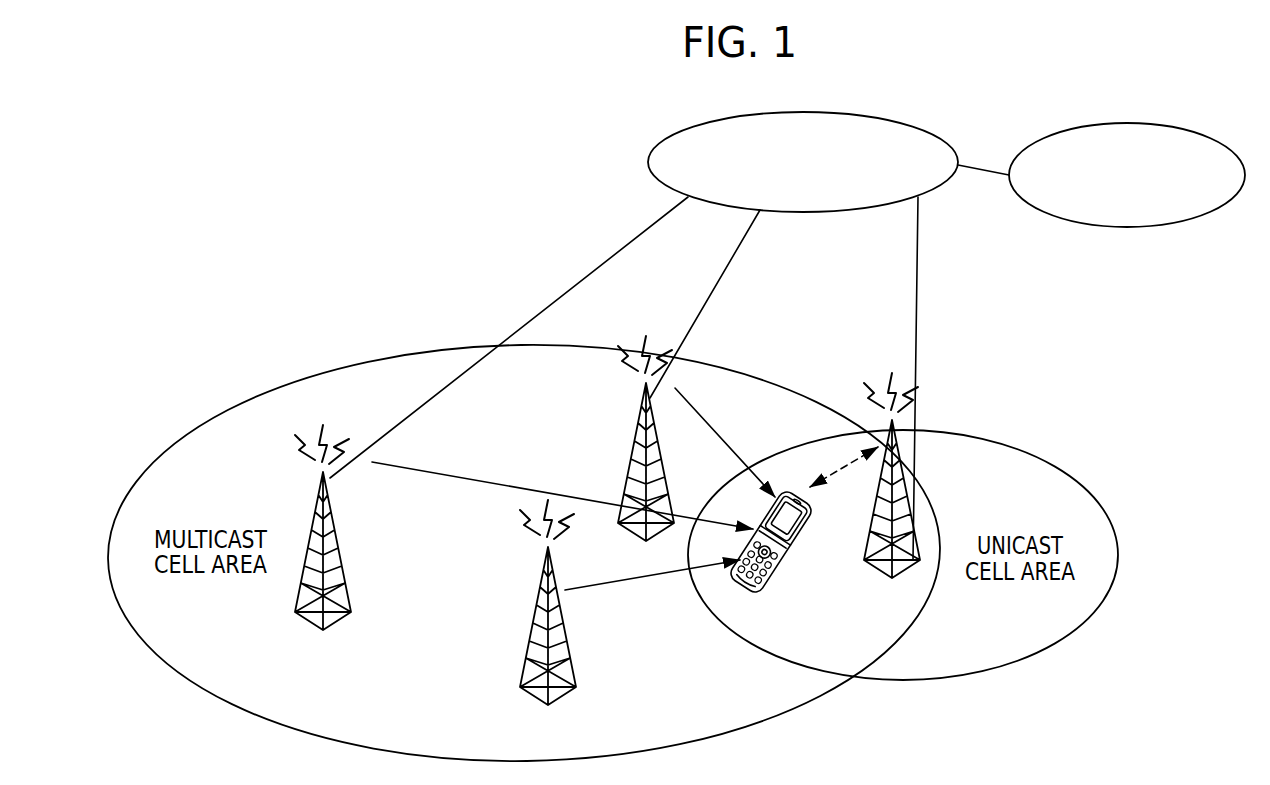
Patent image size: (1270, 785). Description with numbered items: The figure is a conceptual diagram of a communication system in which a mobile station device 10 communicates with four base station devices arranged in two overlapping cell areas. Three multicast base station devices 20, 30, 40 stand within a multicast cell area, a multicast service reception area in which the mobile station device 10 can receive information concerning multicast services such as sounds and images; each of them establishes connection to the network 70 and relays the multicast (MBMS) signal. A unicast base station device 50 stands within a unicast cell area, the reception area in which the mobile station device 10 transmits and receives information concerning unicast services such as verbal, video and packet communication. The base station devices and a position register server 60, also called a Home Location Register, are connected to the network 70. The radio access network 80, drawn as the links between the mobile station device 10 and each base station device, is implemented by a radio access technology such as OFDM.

The mobile station device 10 is at (764, 596).
The base station device 20 is at (572, 661).
The base station device 30 is at (631, 447).
The base station device 40 is at (344, 590).
The base station device 50 is at (880, 582).
The position register server 60 is at (1178, 124).
The network 70 is at (895, 112).
The radio access network 80 is at (460, 479).